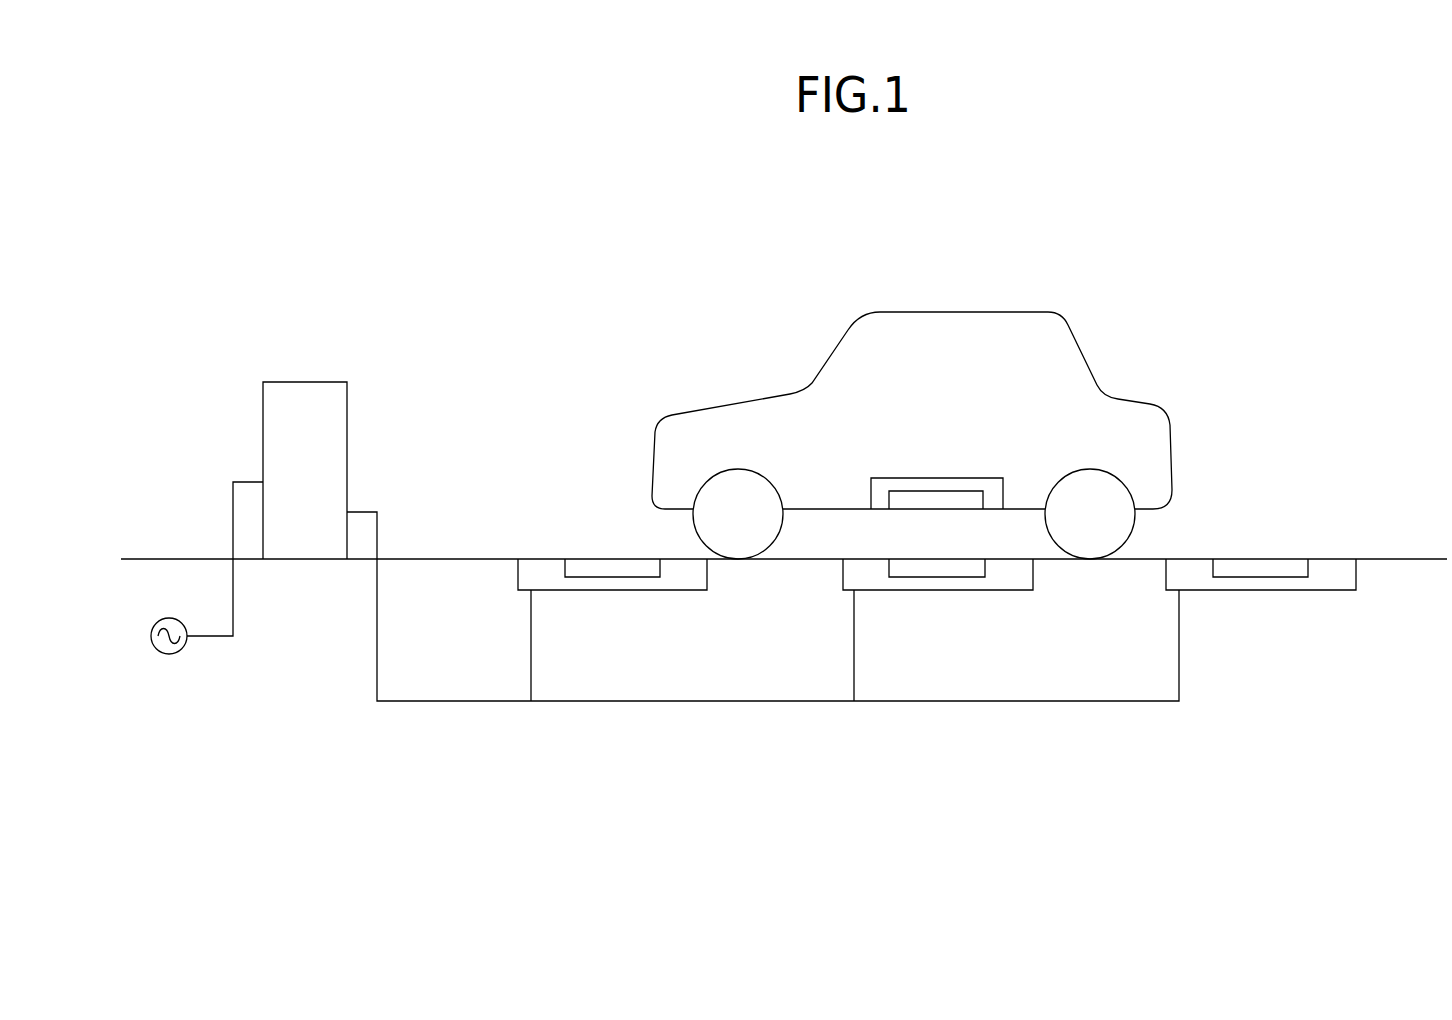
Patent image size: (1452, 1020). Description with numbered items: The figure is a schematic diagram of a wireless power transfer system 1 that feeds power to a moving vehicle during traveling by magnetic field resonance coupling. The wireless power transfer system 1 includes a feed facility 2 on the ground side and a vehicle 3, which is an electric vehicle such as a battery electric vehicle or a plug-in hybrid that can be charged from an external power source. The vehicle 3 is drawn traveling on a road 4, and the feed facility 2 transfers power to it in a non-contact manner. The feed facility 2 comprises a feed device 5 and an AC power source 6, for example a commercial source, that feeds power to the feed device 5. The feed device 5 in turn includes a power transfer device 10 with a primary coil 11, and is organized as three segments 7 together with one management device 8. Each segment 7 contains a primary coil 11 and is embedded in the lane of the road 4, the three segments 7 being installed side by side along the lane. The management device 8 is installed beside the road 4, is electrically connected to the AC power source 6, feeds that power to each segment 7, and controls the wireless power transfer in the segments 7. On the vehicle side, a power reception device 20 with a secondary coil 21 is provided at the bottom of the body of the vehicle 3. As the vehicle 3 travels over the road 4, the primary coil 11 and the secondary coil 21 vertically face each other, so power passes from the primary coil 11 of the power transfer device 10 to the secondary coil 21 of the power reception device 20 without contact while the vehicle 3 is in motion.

The wireless power transfer system 1 is at (1180, 265).
The feed facility 2 is at (256, 330).
The vehicle 3 is at (984, 312).
The road 4 is at (1403, 559).
The feed device 5 is at (515, 724).
The AC power source 6 is at (169, 655).
The segment 7 is at (563, 590).
The management device 8 is at (307, 380).
The power transfer device 10 is at (937, 622).
The primary coil 11 is at (612, 577).
The power reception device 20 is at (985, 478).
The secondary coil 21 is at (937, 491).